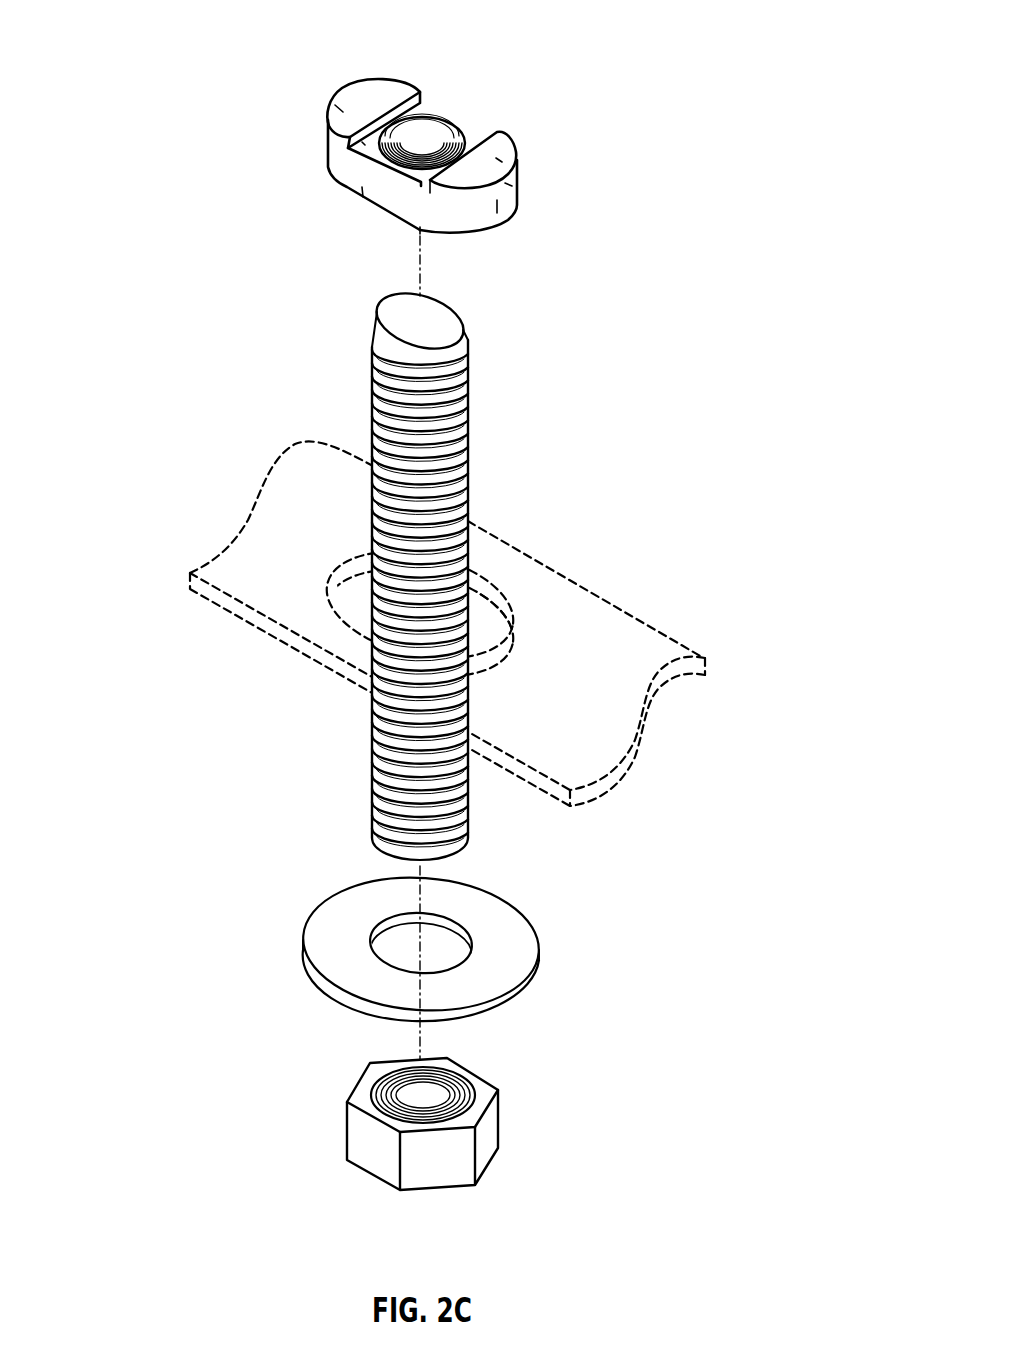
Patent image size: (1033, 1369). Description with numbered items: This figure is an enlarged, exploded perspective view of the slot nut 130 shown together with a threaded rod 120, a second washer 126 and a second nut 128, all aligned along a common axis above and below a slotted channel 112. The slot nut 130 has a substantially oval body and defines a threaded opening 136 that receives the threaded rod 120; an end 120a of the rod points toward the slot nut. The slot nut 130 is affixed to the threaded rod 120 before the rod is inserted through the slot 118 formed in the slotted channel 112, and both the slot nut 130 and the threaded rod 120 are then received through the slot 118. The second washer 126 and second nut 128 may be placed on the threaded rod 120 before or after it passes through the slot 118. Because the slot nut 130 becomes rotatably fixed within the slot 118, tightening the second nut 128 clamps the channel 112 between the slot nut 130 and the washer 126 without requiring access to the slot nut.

The slotted channel 112 is at (412, 623).
The slot 118 is at (507, 623).
The threaded rod 120 is at (511, 552).
The end of bolt 120a is at (447, 327).
The second washer 126 is at (343, 965).
The second nut 128 is at (497, 1135).
The slot nut 130 is at (514, 117).
The threaded opening 136 is at (452, 130).